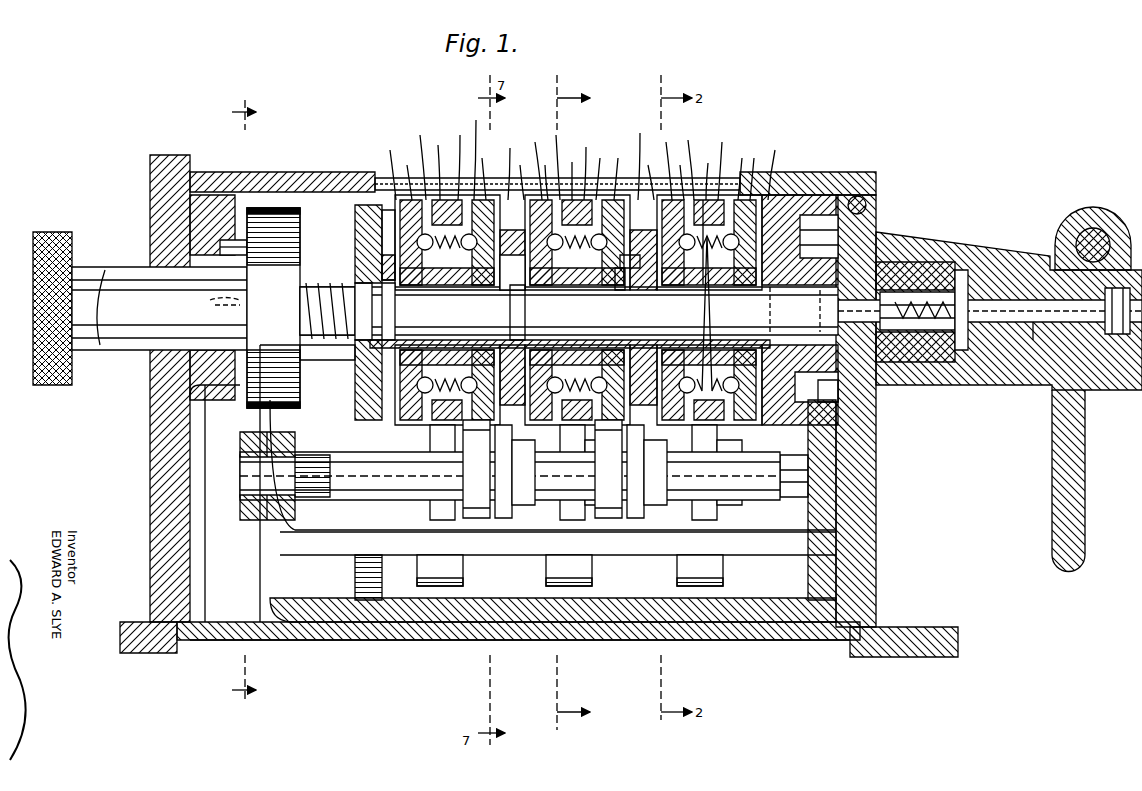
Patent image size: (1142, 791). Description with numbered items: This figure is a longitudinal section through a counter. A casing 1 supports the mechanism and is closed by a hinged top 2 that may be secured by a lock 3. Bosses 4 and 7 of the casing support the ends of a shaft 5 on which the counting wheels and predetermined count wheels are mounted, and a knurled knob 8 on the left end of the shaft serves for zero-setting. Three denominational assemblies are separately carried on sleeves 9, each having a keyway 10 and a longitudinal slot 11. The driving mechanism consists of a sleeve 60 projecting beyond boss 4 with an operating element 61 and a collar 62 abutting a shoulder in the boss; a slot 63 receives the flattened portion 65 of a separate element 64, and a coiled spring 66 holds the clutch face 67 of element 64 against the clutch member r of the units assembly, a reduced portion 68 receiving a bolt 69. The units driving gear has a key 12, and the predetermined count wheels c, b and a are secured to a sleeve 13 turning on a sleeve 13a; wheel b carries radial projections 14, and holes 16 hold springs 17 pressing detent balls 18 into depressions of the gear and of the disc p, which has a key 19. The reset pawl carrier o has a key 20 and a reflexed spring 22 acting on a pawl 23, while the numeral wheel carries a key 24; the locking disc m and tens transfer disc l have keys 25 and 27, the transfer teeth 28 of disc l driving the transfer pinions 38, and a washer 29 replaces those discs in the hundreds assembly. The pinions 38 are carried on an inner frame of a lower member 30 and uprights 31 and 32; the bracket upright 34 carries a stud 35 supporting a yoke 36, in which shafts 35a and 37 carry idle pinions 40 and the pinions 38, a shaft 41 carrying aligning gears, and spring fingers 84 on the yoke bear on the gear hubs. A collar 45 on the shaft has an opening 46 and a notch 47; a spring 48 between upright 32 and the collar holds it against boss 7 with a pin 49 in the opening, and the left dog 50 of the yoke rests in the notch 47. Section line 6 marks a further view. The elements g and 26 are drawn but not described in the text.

The casing 1 is at (150, 490).
The hinged top 2 is at (815, 182).
The boss 4 is at (985, 256).
The shaft 5 is at (569, 311).
The boss 7 is at (216, 385).
The knurled knob 8 is at (54, 232).
The sleeve 9 is at (609, 317).
The keyway 10 is at (578, 313).
The longitudinal slot 11 is at (502, 279).
The key 12 is at (752, 290).
The sleeve 13 is at (450, 290).
The sleeve 13a is at (420, 505).
The radial projections 14 is at (572, 440).
The holes 16 is at (736, 198).
The springs 17 is at (708, 198).
The balls 18 is at (354, 228).
The key 19 is at (570, 320).
The key 20 is at (516, 341).
The reflexed spring 22 is at (368, 252).
The pawl 23 is at (530, 311).
The key 24 is at (360, 270).
The key 25 is at (616, 300).
The countershaft 26 is at (525, 430).
The key 27 is at (499, 312).
The transfer teeth 28 is at (505, 430).
The washer 29 is at (384, 178).
The lower member 30 is at (532, 640).
The upright member 31 is at (862, 560).
The upright member 32 is at (355, 216).
The upright portion 34 is at (240, 440).
The stud 35 is at (905, 470).
The shaft 35a is at (325, 500).
The yoke 36 is at (292, 540).
The shaft 37 is at (325, 360).
The transfer pinions 38 is at (545, 440).
The idle pinions 40 is at (463, 515).
The shaft 41 is at (630, 280).
The collar 45 is at (292, 208).
The opening 46 is at (280, 265).
The peripheral notch 47 is at (240, 292).
The spring 48 is at (330, 340).
The pin 49 is at (232, 240).
The dog 50 is at (247, 305).
The sleeve 60 is at (1040, 320).
The operating element 61 is at (1100, 220).
The collar 62 is at (940, 340).
The slot 63 is at (922, 330).
The element 64 is at (808, 262).
The flattened portion 65 is at (885, 270).
The coiled spring 66 is at (925, 272).
The clutch face 67 is at (790, 200).
The reduced portion 68 is at (925, 385).
The bolt 69 is at (1033, 342).
The spring fingers 84 is at (463, 574).
The section line 6 is at (244, 406).
The lock 3 is at (579, 402).
The locking disc m is at (529, 163).
The reset pawl carrier o is at (543, 175).
The disc p is at (554, 160).
The disc a is at (571, 165).
The numbered wheel b is at (589, 160).
The gear wheel c is at (606, 153).
The clutch element g is at (616, 171).
The tens transfer disc l is at (572, 159).
The clutch member r is at (772, 167).